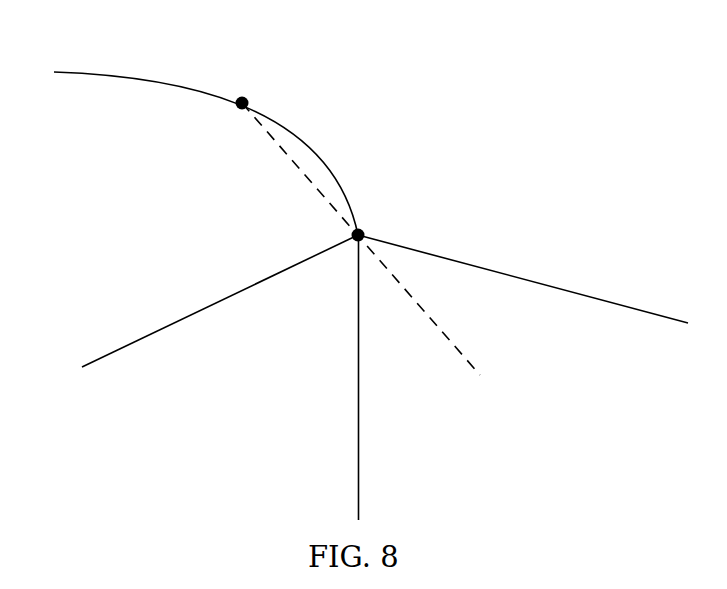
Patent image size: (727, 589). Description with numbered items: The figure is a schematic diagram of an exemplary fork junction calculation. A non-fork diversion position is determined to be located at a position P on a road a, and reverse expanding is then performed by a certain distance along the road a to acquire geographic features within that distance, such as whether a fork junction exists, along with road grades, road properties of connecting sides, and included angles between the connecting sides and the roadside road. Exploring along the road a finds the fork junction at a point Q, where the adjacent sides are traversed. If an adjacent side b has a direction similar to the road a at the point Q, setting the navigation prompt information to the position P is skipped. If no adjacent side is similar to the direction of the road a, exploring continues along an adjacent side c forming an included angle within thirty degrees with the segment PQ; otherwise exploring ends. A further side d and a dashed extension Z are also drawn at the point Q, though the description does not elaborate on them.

The road a is at (193, 125).
The adjacent side b is at (207, 301).
The adjacent side c is at (374, 377).
The line d is at (523, 279).
The non-fork diversion position P is at (257, 92).
The fork junction point Q is at (370, 223).
The dashed line Z is at (376, 241).